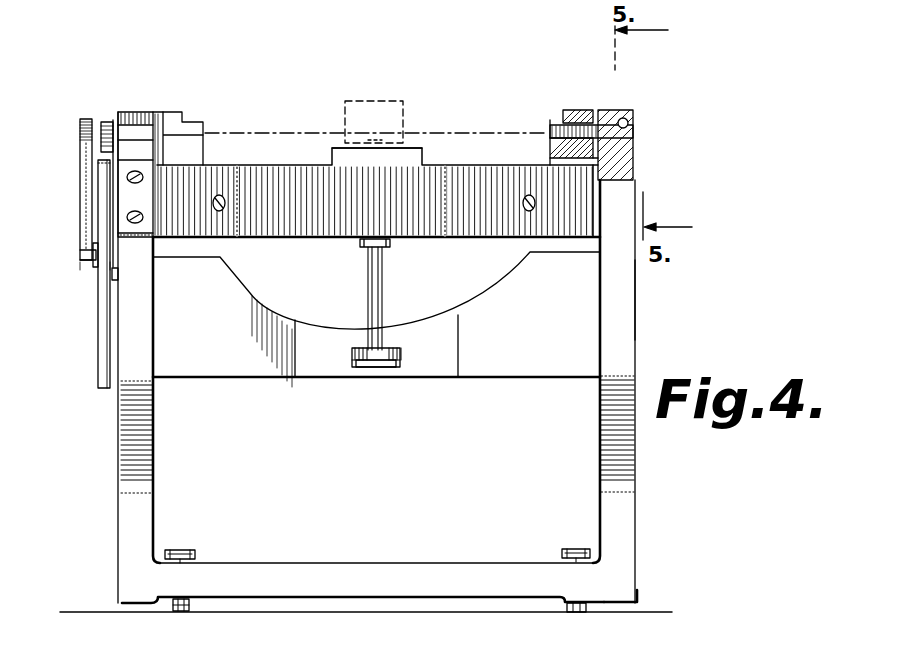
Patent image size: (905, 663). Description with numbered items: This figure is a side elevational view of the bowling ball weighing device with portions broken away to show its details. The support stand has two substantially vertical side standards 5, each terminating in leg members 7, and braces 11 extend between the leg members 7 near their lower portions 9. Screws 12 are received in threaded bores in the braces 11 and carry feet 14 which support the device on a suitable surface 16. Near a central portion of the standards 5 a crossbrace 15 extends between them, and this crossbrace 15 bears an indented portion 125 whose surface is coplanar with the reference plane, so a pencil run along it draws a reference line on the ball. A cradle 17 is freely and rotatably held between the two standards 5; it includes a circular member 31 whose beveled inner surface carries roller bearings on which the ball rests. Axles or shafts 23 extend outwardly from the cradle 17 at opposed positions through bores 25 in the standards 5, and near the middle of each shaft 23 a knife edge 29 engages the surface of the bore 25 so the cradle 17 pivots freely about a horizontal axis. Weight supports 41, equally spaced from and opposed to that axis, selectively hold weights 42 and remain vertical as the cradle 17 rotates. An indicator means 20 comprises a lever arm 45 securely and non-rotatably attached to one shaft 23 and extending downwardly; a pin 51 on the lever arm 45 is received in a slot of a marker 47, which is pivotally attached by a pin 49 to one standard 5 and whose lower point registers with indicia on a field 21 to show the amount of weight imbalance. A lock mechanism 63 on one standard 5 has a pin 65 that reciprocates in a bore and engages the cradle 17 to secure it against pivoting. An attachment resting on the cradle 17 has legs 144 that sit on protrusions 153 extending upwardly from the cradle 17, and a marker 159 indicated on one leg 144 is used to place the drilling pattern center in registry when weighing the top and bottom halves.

The side standards 5 is at (636, 300).
The leg members 7 is at (636, 498).
The lower portions 9 is at (637, 586).
The braces 11 is at (354, 561).
The screws 12 is at (184, 550).
The feet 14 is at (184, 612).
The crossbrace 15 is at (486, 296).
The surface 16 is at (432, 596).
The cradle 17 is at (455, 165).
The indicator means 20 is at (97, 284).
The field 21 is at (118, 425).
The cradle shafts 23 is at (114, 128).
The bores 25 is at (622, 122).
The knife edge 29 is at (634, 151).
The circular member 31 is at (318, 237).
The weight supports 41 is at (352, 364).
The weights 42 is at (396, 353).
The lever arm 45 is at (80, 123).
The marker 47 is at (98, 345).
The pin 49 is at (114, 280).
The pin 51 is at (95, 250).
The lock mechanism 63 is at (147, 187).
The pin 65 is at (104, 122).
The indented portion 125 is at (448, 358).
The attachment legs 144 is at (345, 108).
The protrusions 153 is at (332, 151).
The marker 159 is at (386, 128).